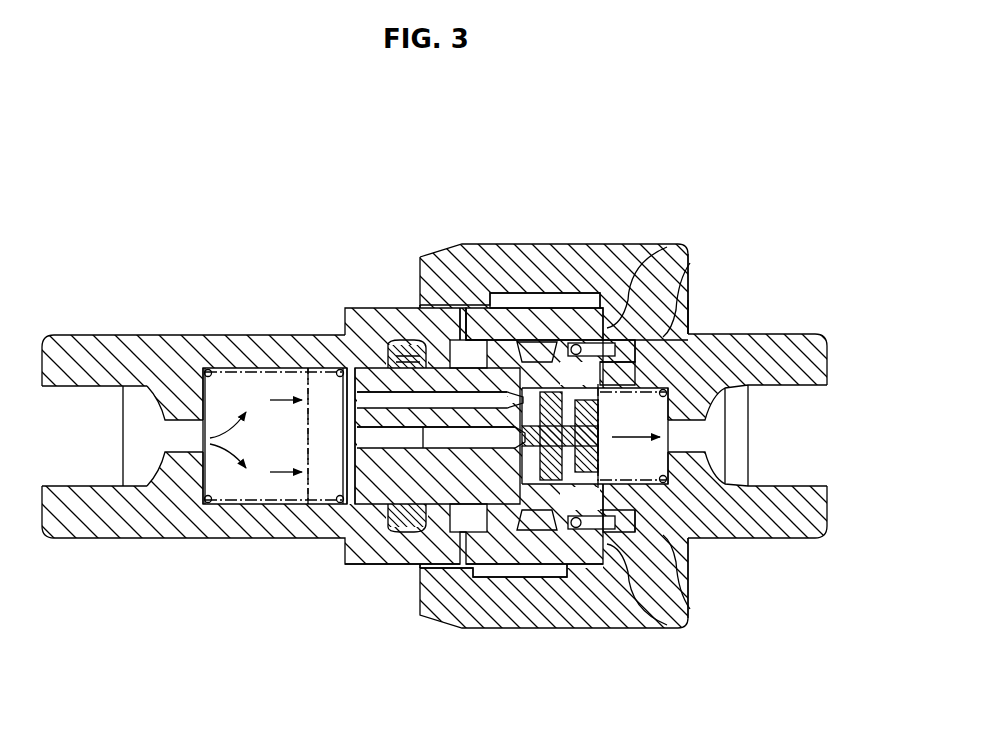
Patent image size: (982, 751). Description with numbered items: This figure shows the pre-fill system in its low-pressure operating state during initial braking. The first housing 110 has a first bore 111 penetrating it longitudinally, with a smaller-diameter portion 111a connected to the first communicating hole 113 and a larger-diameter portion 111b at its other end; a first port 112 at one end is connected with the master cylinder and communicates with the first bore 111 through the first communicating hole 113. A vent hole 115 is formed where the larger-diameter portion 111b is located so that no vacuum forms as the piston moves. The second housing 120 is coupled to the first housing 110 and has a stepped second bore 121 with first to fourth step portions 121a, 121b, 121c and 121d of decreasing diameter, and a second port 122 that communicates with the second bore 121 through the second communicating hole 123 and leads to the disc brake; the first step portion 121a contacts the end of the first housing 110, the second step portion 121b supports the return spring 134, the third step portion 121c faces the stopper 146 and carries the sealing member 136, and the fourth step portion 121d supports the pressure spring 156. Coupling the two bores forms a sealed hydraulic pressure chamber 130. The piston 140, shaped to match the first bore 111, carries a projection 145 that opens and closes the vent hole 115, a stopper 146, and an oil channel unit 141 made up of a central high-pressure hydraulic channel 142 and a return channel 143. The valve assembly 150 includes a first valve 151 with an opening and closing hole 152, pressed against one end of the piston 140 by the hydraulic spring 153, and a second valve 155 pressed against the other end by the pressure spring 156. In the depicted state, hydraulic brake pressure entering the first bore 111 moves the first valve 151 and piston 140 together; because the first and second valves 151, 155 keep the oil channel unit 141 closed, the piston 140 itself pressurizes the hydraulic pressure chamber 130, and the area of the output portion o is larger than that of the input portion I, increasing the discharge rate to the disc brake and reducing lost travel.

The first housing 110 is at (148, 330).
The first bore 111 is at (455, 700).
The smaller-diameter portion 111a is at (414, 576).
The larger-diameter portion 111b is at (472, 580).
The first port 112 is at (112, 437).
The first communicating hole 113 is at (188, 440).
The vent hole 115 is at (452, 332).
The second housing 120 is at (578, 236).
The second bore 121 is at (530, 580).
The first step portion 121a is at (600, 338).
The second step portion 121b is at (646, 346).
The third step portion 121c is at (662, 376).
The fourth step portion 121d is at (690, 342).
The second port 122 is at (762, 438).
The second communicating hole 123 is at (702, 492).
The hydraulic pressure chamber 130 is at (686, 548).
The return spring 134 is at (624, 522).
The sealing member 136 is at (642, 522).
The piston 140 is at (384, 520).
The oil channel unit 141 is at (345, 242).
The high-pressure hydraulic channel 142 is at (438, 435).
The return channel 143 is at (376, 398).
The projection 145 is at (497, 305).
The stopper 146 is at (534, 300).
The valve assembly 150 is at (330, 402).
The first valve 151 is at (342, 500).
The opening and closing hole 152 is at (300, 500).
The hydraulic spring 153 is at (212, 500).
The second valve 155 is at (566, 545).
The pressure spring 156 is at (552, 548).
The output portion o is at (580, 530).
The input portion I is at (318, 482).